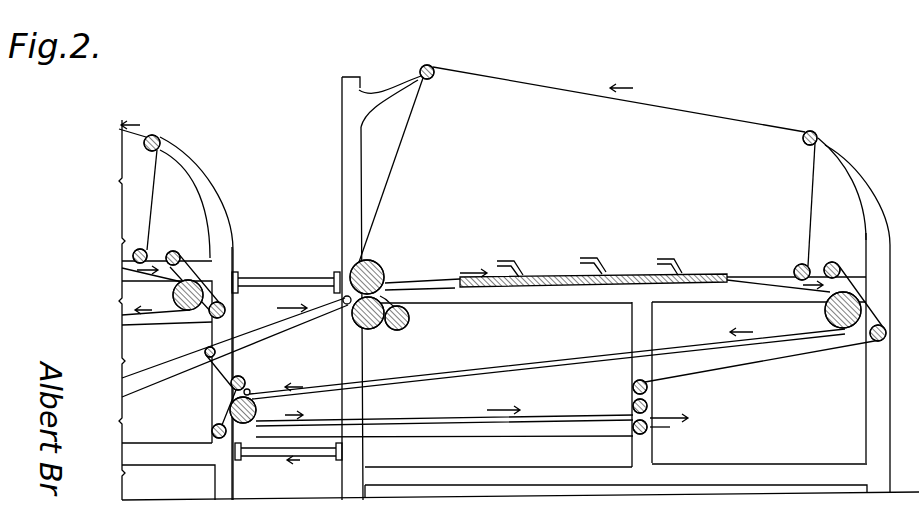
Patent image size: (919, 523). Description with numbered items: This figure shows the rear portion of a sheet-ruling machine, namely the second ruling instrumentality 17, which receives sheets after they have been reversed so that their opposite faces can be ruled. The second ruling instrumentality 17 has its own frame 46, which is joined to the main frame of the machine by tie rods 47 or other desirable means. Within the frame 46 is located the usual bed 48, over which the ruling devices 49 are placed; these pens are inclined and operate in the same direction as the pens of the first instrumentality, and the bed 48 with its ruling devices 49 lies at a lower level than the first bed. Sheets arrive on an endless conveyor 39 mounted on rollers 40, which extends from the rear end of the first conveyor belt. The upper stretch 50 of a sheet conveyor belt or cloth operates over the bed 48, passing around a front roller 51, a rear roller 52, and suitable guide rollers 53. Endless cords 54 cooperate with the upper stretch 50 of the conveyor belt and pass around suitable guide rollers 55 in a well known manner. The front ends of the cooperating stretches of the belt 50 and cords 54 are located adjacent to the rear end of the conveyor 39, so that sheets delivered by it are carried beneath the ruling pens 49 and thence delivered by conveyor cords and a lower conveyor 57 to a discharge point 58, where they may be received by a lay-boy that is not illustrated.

The second ruling instrumentality 17 is at (624, 166).
The endless conveyor 39 is at (172, 378).
The rollers 40 is at (206, 355).
The frame 46 is at (655, 398).
The tie rods 47 is at (289, 278).
The bed 48 is at (547, 290).
The ruling devices 49 is at (527, 273).
The upper stretch of sheet conveyor belt 50 is at (430, 296).
The front roller 51 is at (408, 326).
The rear roller 52 is at (826, 310).
The guide rollers 53 is at (396, 332).
The endless cords 54 is at (380, 201).
The guide rollers 55 is at (431, 80).
The lower conveyor 57 is at (495, 438).
The discharge point 58 is at (652, 428).